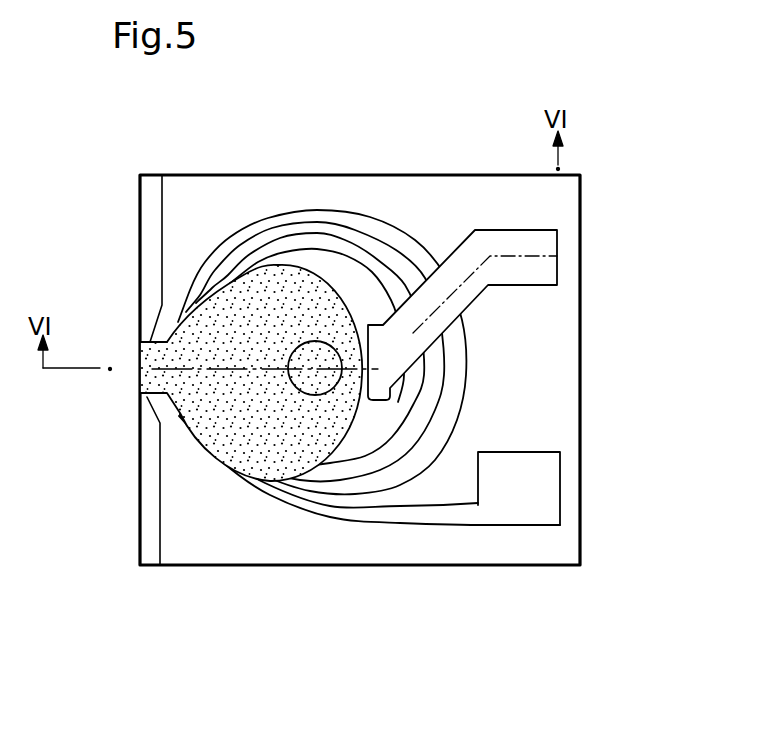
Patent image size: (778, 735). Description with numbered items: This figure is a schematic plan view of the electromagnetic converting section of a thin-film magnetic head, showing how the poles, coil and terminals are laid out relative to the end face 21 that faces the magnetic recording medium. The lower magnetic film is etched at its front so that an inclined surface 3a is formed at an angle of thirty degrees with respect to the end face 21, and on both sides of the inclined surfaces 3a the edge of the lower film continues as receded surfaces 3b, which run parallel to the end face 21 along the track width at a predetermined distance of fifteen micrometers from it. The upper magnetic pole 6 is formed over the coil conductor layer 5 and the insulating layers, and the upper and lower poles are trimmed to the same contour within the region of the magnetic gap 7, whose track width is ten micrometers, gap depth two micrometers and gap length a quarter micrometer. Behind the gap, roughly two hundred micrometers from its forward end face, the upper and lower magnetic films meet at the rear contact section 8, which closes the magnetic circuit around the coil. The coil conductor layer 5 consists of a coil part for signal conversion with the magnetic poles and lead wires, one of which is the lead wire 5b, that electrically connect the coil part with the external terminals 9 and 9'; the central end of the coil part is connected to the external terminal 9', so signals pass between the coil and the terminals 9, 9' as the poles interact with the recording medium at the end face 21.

The end face 21 is at (139, 251).
The inclined surface 3a is at (153, 328).
The receded surface 3b is at (160, 543).
The magnetic gap 7 is at (138, 382).
The upper magnetic pole 6 is at (205, 398).
The rear contact section 8 is at (313, 340).
The coil conductor layer 5 is at (363, 526).
The lead wire 5b is at (433, 523).
The external terminal 9 is at (548, 488).
The external terminal 9' is at (497, 315).